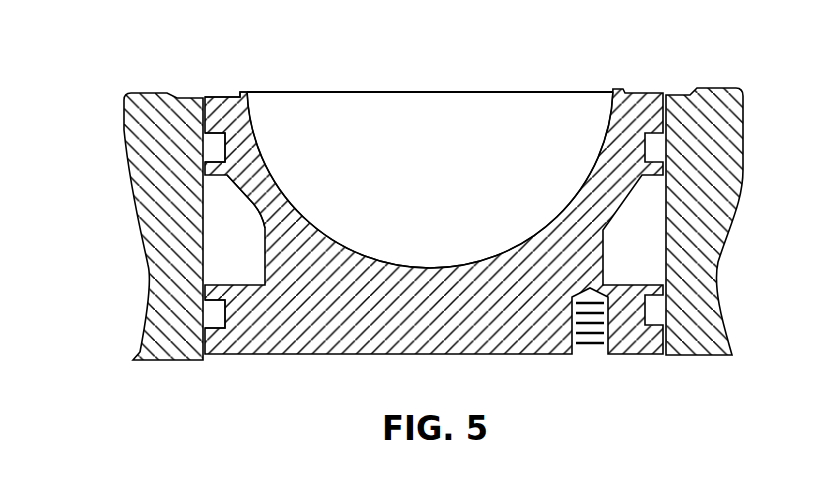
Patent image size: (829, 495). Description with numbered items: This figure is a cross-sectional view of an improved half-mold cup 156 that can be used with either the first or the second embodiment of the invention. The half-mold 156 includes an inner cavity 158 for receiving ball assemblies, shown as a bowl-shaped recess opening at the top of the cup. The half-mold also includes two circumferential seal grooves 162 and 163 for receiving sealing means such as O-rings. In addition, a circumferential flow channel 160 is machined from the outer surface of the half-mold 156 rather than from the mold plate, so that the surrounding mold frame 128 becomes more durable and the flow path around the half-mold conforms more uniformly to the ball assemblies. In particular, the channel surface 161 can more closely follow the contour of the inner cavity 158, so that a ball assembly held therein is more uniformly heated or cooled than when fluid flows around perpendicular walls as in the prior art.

The mold frame 128 is at (130, 131).
The half-mold 156 is at (228, 97).
The inner cavity 158 is at (606, 127).
The circumferential flow channel 160 is at (268, 258).
The channel surface 161 is at (273, 161).
The circumferential seal groove 162 is at (226, 317).
The circumferential seal groove 163 is at (227, 143).